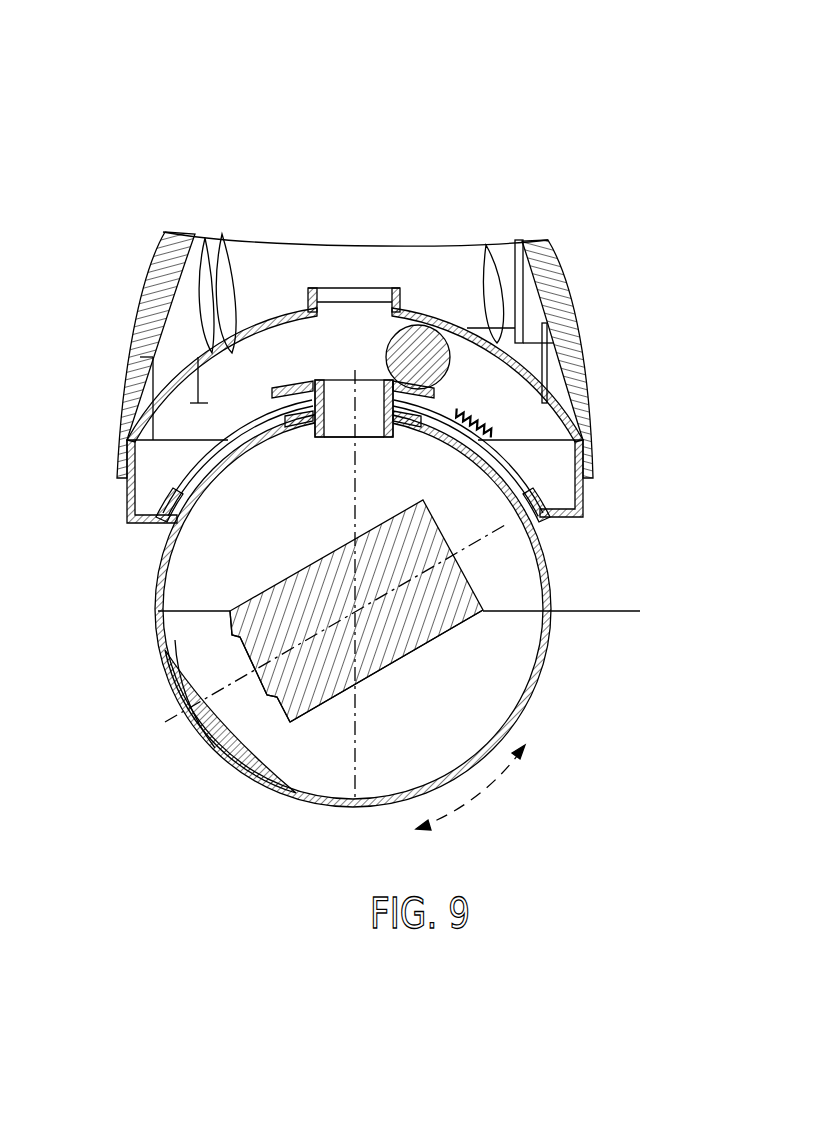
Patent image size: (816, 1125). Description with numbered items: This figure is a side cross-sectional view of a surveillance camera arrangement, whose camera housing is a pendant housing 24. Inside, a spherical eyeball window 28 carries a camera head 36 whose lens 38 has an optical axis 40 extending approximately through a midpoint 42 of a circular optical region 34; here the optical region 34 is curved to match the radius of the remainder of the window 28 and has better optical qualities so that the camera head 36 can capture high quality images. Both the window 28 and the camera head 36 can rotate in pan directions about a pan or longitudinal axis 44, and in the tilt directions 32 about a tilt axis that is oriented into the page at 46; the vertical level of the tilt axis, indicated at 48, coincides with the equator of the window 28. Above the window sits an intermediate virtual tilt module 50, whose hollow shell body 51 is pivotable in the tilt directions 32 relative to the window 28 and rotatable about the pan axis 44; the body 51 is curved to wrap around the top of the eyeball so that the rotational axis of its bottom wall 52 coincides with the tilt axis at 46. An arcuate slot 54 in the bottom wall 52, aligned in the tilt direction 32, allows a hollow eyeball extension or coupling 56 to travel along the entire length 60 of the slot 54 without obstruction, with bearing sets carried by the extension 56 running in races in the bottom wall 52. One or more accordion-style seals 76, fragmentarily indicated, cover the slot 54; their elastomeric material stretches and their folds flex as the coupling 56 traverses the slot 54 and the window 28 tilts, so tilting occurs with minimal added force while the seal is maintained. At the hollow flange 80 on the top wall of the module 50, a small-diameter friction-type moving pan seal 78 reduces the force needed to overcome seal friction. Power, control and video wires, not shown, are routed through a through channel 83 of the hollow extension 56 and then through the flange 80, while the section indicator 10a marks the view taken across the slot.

The length of slot 60 is at (533, 0).
The moving pan seal 78 is at (400, 300).
The virtual tilt module 50 is at (278, 245).
The hollow flange 80 is at (330, 300).
The accordion-style seal 76 is at (458, 428).
The pendant housing 24 is at (580, 372).
The hollow eyeball extension 56 is at (308, 380).
The arcuate slot 54 is at (243, 427).
The through channel 83 is at (372, 422).
The hollow shell body 51 is at (127, 500).
The bottom wall 52 is at (497, 505).
The vertical level of tilt axis 48 is at (640, 611).
The tilt axis 46 is at (357, 612).
The optical axis 40 is at (222, 693).
The camera head 36 is at (405, 648).
The midpoint of optical region 42 is at (197, 700).
The spherical window 28 is at (527, 707).
The optical region 34 is at (190, 765).
The lens 38 is at (262, 697).
The pan axis 44 is at (336, 762).
The tilt directions 32 is at (480, 790).
The section view indicator 10a is at (355, 968).